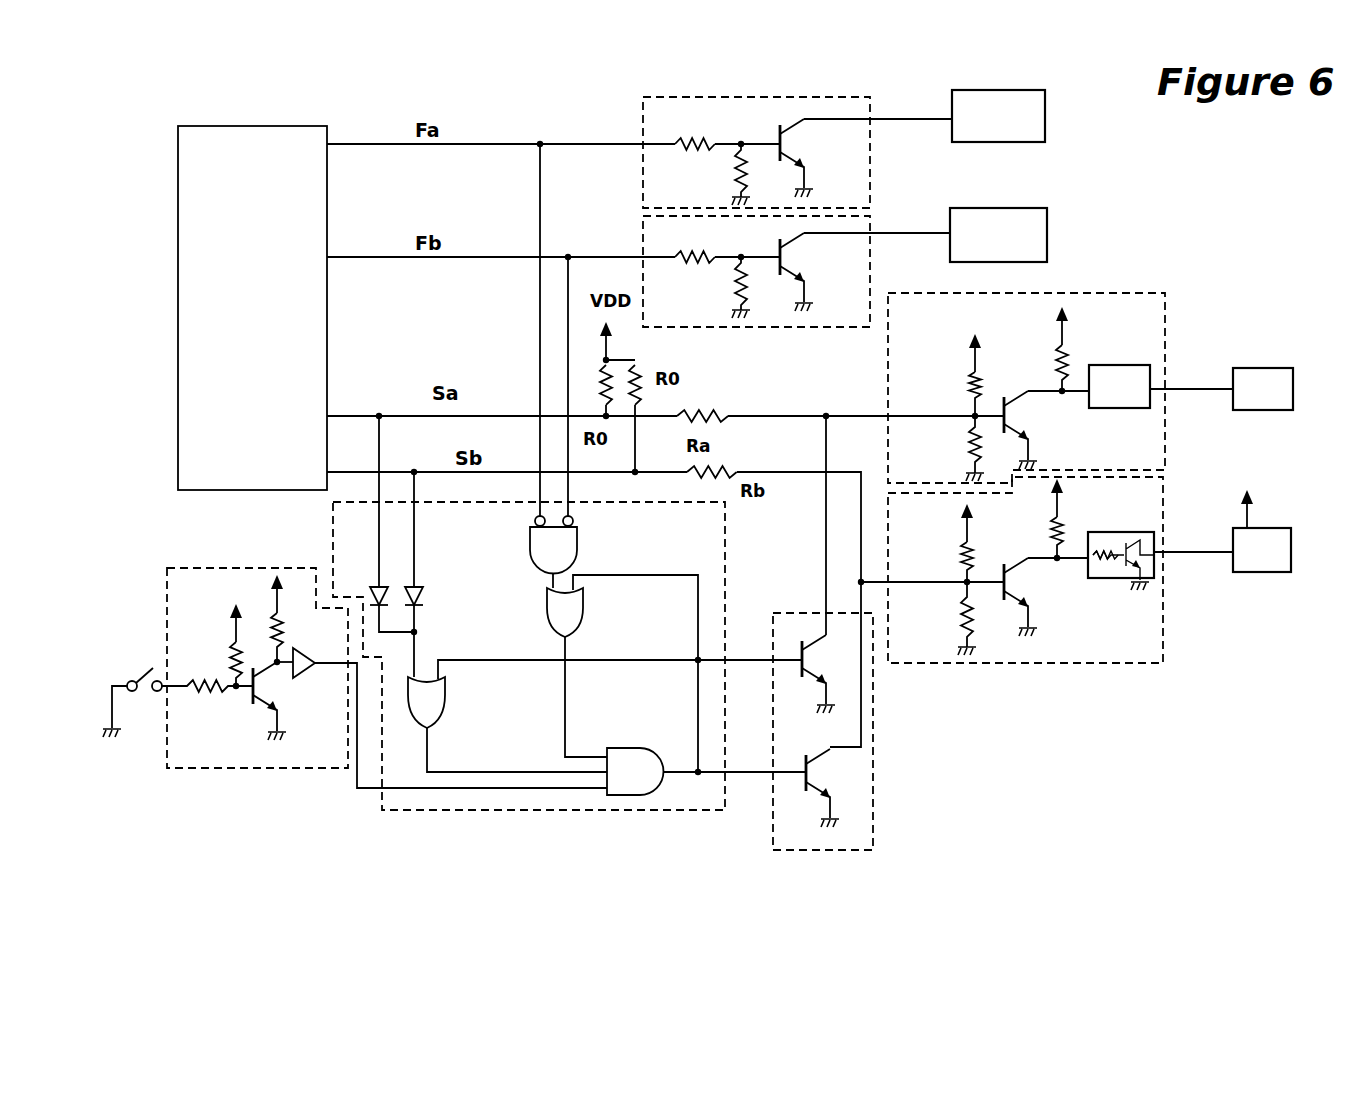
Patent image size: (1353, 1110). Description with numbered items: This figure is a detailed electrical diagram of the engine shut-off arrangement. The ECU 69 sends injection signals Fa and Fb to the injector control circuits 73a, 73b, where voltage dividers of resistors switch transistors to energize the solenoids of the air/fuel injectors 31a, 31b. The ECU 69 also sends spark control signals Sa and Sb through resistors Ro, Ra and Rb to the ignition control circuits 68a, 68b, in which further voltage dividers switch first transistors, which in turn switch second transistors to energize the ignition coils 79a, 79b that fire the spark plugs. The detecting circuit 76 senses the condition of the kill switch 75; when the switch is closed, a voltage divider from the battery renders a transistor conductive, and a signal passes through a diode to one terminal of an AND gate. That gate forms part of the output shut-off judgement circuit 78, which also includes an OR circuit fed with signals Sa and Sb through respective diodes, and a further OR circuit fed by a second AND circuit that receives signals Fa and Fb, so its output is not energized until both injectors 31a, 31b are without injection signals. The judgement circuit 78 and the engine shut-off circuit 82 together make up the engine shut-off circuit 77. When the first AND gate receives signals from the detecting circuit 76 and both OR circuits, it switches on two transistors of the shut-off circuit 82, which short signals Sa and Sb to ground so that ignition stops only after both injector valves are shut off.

The ECU 69 is at (218, 126).
The injector control circuit 73a is at (700, 97).
The injector control circuit 73b is at (726, 327).
The air/fuel injector 31a is at (1047, 108).
The air/fuel injector 31b is at (1047, 238).
The ignition control circuit 68a is at (1075, 293).
The ignition control circuit 68b is at (1013, 663).
The ignition coil 79a is at (1253, 368).
The ignition coil 79b is at (1291, 547).
The kill switch 75 is at (147, 677).
The detecting circuit 76 is at (250, 768).
The output shut-off judgement circuit 78 is at (425, 810).
The engine shut-off circuit 82 is at (772, 808).
The engine shut-off circuit 77 is at (722, 860).